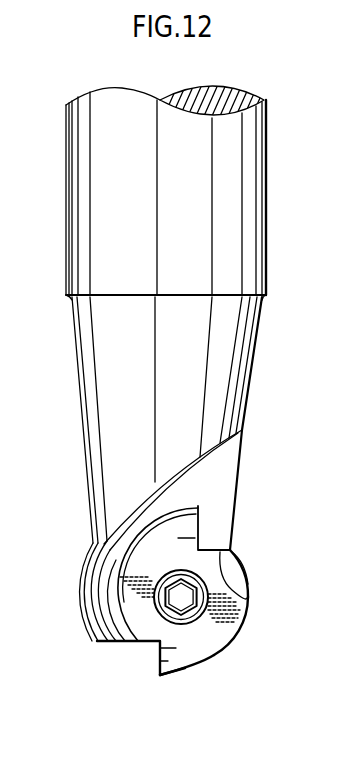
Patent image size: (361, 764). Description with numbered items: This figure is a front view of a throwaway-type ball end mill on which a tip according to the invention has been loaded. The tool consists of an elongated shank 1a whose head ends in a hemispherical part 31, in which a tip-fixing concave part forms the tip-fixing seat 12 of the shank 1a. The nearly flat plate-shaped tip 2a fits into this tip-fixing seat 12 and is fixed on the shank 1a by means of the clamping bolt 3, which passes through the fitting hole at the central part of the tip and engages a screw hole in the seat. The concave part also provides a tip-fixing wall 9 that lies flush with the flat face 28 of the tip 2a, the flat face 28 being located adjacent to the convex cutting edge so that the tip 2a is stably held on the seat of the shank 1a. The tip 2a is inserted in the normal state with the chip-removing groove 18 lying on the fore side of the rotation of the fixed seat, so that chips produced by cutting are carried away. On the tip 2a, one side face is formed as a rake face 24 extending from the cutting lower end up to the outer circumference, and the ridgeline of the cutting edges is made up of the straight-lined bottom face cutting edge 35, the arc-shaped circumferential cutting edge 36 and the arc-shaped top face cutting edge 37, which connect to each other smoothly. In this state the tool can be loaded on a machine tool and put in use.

The shank 1a is at (270, 231).
The chip-removing groove 18 is at (216, 473).
The flat face 28 is at (210, 548).
The arc-shaped top face cutting edge 37 is at (241, 560).
The tip-fixing seat 12 is at (148, 532).
The tip-fixing wall 9 is at (250, 589).
The clamping bolt 3 is at (164, 600).
The hemispherical part 31 is at (90, 630).
The rake face 24 is at (160, 663).
The straight-lined bottom face cutting edge 35 is at (174, 675).
The tip 2a is at (224, 658).
The arc-shaped circumferential cutting edge 36 is at (234, 635).